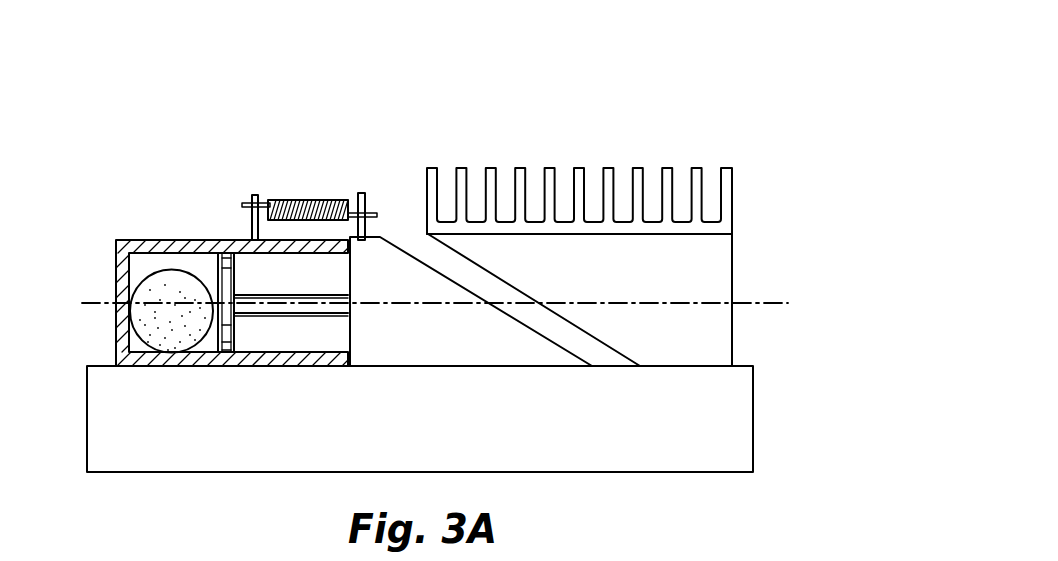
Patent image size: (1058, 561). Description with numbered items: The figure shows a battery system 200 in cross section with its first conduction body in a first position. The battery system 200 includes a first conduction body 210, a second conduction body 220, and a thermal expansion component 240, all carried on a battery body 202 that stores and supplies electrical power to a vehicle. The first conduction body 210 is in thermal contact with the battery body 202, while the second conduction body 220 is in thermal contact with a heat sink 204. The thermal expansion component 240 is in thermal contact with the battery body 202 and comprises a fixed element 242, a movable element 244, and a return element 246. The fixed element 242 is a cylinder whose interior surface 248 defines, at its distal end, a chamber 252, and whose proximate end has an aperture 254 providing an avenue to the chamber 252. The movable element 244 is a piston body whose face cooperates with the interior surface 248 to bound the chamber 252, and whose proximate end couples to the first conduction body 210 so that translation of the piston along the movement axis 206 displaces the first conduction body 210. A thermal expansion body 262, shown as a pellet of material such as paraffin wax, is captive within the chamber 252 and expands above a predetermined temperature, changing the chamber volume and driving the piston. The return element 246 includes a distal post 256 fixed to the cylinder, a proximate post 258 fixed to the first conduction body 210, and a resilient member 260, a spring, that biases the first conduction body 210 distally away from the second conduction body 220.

The battery system 200 is at (603, 100).
The battery body 202 is at (743, 435).
The heat sink 204 is at (732, 188).
The movement axis 206 is at (777, 303).
The first conduction body 210 is at (427, 347).
The second conduction body 220 is at (675, 338).
The thermal expansion component 240 is at (87, 208).
The fixed element 242 is at (122, 292).
The movable element 244 is at (226, 335).
The return element 246 is at (337, 137).
The interior surface 248 is at (142, 268).
The chamber 252 is at (135, 340).
The aperture 254 is at (325, 325).
The distal post 256 is at (247, 196).
The proximate post 258 is at (372, 193).
The resilient member 260 is at (302, 199).
The thermal expansion body 262 is at (175, 280).